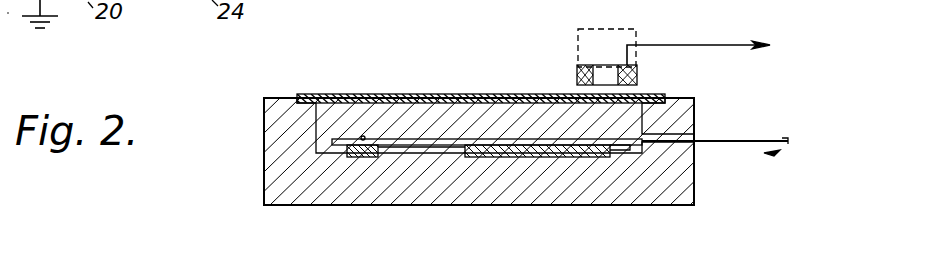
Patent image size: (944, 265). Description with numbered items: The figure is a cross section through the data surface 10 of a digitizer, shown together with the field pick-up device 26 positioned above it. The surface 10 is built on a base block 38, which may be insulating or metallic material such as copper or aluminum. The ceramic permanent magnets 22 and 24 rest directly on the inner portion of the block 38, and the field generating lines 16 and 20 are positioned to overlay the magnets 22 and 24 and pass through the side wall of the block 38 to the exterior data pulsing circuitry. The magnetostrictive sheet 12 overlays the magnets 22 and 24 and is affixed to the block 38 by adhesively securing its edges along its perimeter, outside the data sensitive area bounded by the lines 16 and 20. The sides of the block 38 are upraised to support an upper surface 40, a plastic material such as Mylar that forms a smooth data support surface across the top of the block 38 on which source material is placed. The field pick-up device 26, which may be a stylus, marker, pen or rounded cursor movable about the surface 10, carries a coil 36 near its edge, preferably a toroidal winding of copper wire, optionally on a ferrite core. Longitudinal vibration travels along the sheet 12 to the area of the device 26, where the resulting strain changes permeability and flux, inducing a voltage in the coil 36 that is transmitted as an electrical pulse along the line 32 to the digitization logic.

The data surface 10 is at (277, 90).
The magnetostrictive sheet 12 is at (342, 141).
The field generating line 16 is at (364, 136).
The field generating line 20 is at (675, 140).
The ceramic permanent magnet 22 is at (362, 157).
The ceramic permanent magnet 24 is at (555, 150).
The field pick-up device 26 is at (645, 16).
The line 32 is at (715, 43).
The coil 36 is at (577, 74).
The base block 38 is at (675, 200).
The upper surface 40 is at (405, 95).